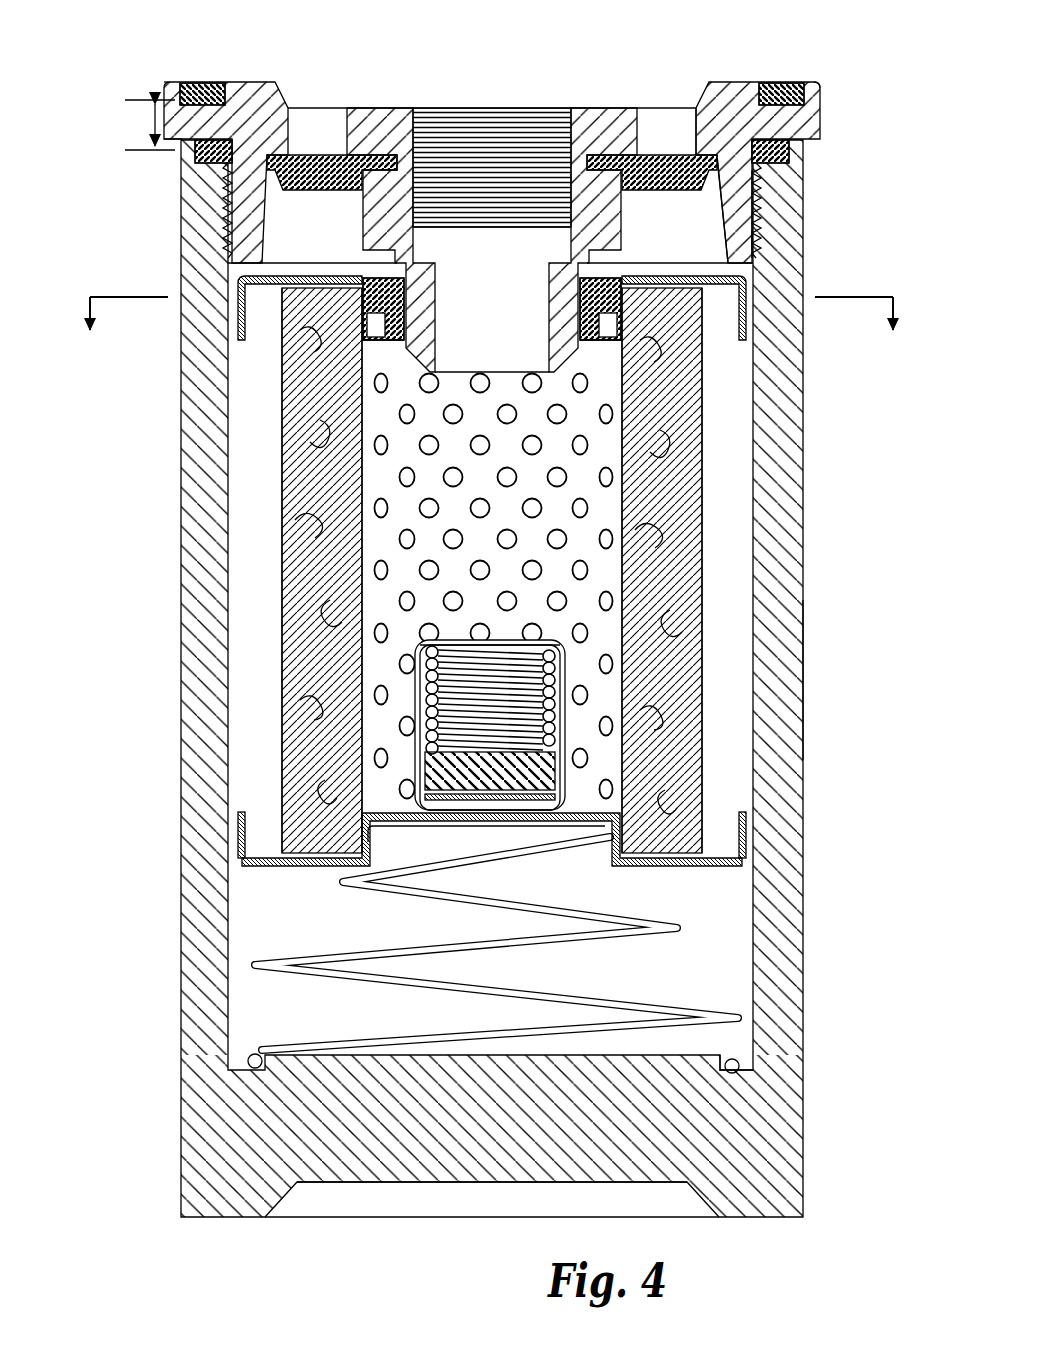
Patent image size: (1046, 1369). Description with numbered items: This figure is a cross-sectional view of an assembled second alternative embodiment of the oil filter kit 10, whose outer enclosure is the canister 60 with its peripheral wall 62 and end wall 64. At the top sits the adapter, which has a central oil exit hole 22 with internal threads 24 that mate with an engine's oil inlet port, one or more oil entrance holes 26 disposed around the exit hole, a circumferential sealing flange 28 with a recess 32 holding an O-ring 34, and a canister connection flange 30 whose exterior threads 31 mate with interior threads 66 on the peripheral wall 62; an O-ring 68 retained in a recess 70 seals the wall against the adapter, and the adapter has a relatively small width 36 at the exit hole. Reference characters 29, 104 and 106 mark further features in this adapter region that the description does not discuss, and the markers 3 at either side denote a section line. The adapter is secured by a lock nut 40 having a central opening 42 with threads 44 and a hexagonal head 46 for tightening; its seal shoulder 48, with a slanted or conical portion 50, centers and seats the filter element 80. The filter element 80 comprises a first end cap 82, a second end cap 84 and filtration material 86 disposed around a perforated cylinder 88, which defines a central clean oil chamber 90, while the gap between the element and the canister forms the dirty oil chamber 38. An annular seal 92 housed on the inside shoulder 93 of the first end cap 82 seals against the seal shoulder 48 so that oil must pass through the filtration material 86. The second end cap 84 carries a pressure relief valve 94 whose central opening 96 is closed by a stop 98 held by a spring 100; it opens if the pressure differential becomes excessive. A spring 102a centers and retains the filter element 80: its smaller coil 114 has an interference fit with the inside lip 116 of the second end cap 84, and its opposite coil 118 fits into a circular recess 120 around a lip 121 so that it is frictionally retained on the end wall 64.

The section line 3- 3 is at (504, 321).
The oil filter kit 10 is at (122, 185).
The central oil exit hole 22 is at (500, 135).
The threads 24 is at (382, 125).
The oil entrance holes 26 is at (318, 125).
The circumferential sealing flange 28 is at (818, 100).
The cap corner 29 is at (240, 76).
The canister connection flange 30 is at (763, 210).
The exterior threads 31 is at (762, 185).
The recess 32 is at (715, 100).
The O-ring 34 is at (790, 80).
The width 36 is at (125, 125).
The dirty oil chamber 38 is at (272, 553).
The lock nut 40 is at (362, 222).
The central opening 42 is at (468, 304).
The threads 44 is at (497, 106).
The hexagonal head 46 is at (732, 215).
The seal shoulder 48 is at (568, 336).
The slanted or conical portion 50 is at (585, 348).
The canister 60 is at (806, 668).
The peripheral wall 62 is at (792, 500).
The end wall 64 is at (348, 1172).
The interior threads 66 is at (764, 240).
The O-ring 68 is at (790, 152).
The recess 70 is at (215, 162).
The filter element 80 is at (282, 435).
The first end cap 82 is at (242, 303).
The second end cap 84 is at (746, 842).
The filtration material 86 is at (305, 585).
The perforated cylinder 88 is at (372, 540).
The clean oil chamber 90 is at (463, 492).
The seal 92 is at (365, 336).
The inside shoulder 93 is at (365, 308).
The pressure relief valve 94 is at (410, 703).
The central opening 96 is at (462, 805).
The stop 98 is at (470, 777).
The spring 100 is at (557, 690).
The spring 102a is at (262, 972).
The gasket 104 is at (330, 172).
The gasket 106 is at (320, 152).
The smaller coil 114 is at (578, 843).
The inside lip 116 is at (697, 857).
The coil 118 is at (738, 1057).
The circular recess 120 is at (742, 1068).
The lip 121 is at (736, 1080).